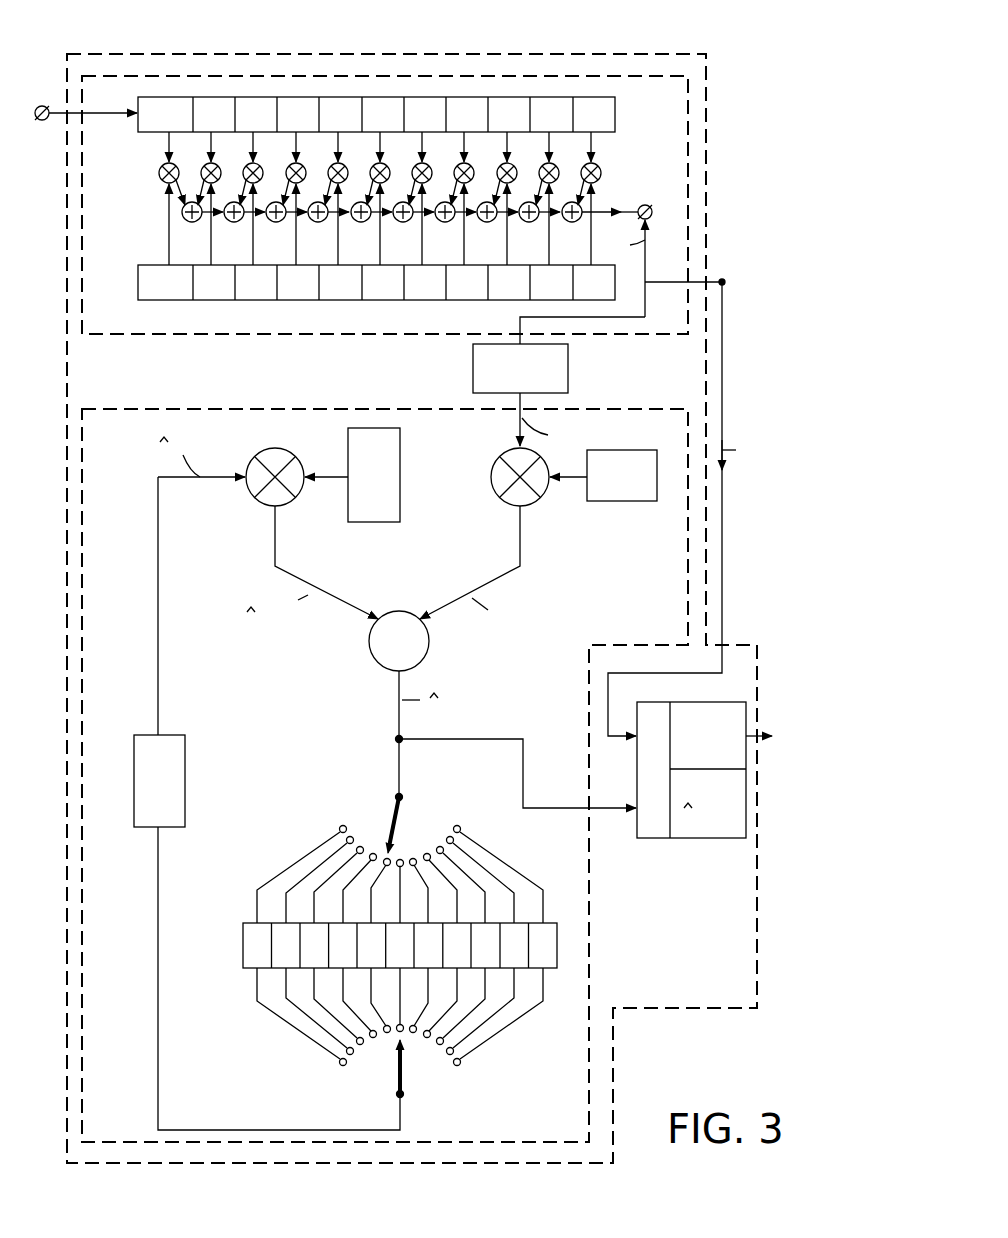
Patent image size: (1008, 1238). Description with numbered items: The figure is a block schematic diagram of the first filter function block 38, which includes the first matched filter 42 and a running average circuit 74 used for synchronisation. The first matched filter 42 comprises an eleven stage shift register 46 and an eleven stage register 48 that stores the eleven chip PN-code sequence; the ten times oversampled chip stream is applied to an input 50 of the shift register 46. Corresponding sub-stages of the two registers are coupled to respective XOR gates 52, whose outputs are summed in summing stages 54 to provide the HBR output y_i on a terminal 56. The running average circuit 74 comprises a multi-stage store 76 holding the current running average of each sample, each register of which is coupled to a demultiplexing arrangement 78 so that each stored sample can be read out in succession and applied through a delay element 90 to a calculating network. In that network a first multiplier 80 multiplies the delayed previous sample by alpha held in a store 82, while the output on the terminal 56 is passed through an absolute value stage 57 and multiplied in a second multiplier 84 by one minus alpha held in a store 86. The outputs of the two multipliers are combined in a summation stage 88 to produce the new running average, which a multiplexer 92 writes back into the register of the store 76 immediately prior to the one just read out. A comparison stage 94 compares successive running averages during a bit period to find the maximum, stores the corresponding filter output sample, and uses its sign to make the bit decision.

The first filter function block 38 is at (572, 48).
The first matched filter 42 is at (629, 70).
The shift register 46 is at (618, 112).
The register 48 is at (137, 284).
The input 50 is at (39, 104).
The XOR gates 52 is at (158, 174).
The summing stages 54 is at (181, 213).
The terminal 56 is at (646, 203).
The absolute value stage 57 is at (473, 363).
The running average circuit 74 is at (592, 1047).
The multi-stage store 76 is at (242, 948).
The demultiplexing arrangement 78 is at (378, 1058).
The first multiplier 80 is at (268, 500).
The store 82 is at (378, 517).
The second multiplier 84 is at (516, 500).
The store 86 is at (628, 500).
The summation stage 88 is at (382, 663).
The delay element 90 is at (177, 809).
The multiplexer 92 is at (381, 820).
The comparison stage 94 is at (710, 841).